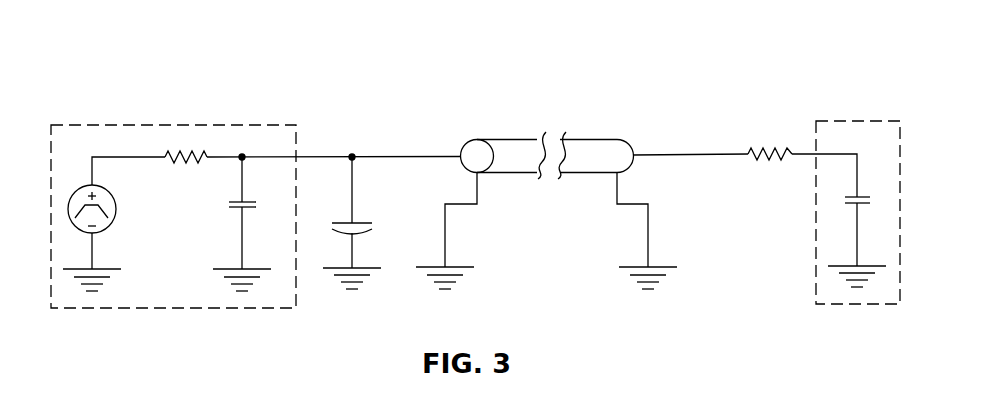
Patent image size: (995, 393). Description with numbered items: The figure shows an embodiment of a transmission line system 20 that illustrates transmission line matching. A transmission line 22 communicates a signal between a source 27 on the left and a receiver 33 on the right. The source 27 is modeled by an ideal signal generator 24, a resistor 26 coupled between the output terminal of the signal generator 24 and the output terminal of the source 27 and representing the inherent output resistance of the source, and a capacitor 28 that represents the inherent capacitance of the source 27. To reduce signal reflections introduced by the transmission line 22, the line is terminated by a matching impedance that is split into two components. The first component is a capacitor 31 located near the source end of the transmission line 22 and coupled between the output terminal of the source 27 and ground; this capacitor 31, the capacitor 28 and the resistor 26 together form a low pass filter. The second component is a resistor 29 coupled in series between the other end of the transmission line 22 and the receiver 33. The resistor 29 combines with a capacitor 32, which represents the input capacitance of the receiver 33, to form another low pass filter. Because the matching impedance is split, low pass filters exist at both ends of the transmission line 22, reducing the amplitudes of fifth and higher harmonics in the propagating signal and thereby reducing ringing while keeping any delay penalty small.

The transmission line system 20 is at (722, 70).
The transmission line 22 is at (585, 135).
The ideal signal generator 24 is at (72, 194).
The resistor 26 is at (163, 150).
The source 27 is at (185, 309).
The capacitor 28 is at (253, 197).
The resistor 29 is at (772, 145).
The capacitor 31 is at (358, 222).
The capacitor 32 is at (863, 192).
The receiver 33 is at (838, 304).